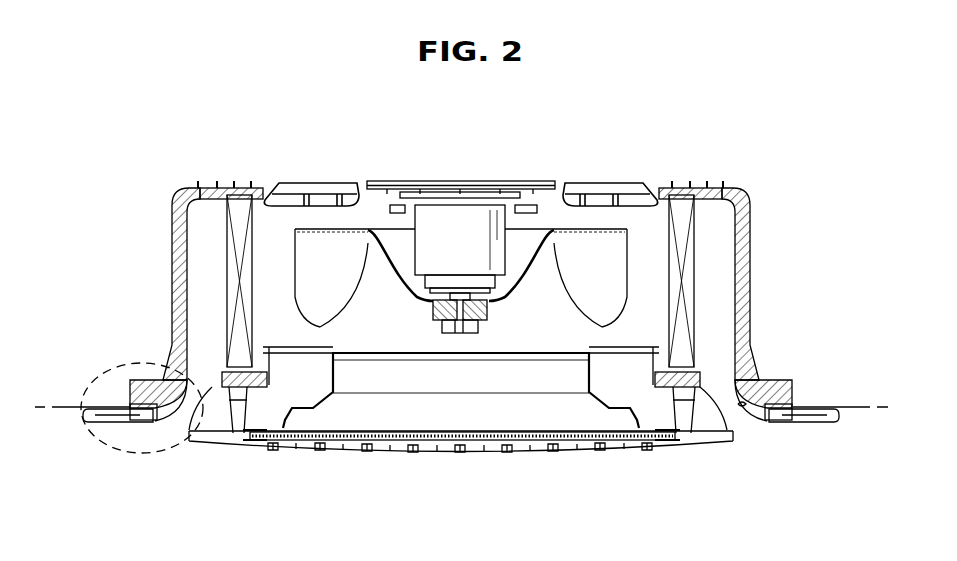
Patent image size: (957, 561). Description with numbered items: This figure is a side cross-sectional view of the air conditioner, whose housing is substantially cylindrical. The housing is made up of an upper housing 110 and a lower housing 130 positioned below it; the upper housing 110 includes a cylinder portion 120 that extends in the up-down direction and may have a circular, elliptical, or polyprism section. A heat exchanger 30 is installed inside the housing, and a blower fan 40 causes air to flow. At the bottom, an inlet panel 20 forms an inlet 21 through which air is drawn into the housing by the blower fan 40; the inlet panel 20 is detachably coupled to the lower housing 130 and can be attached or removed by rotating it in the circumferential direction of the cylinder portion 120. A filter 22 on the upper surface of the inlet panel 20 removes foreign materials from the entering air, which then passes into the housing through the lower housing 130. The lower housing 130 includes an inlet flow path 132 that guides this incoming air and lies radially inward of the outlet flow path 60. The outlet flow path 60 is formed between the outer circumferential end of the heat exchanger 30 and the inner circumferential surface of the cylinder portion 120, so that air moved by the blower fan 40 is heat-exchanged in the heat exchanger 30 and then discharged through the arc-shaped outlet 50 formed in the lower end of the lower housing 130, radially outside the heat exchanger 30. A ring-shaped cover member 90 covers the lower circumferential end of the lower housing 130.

The inlet panel 20 is at (679, 443).
The inlet 21 is at (530, 446).
The filter 22 is at (448, 436).
The heat exchanger 30 is at (650, 194).
The blower fan 40 is at (564, 247).
The outlet 50 is at (737, 410).
The outlet flow path 60 is at (709, 292).
The cover member 90 is at (837, 420).
The upper housing 110 is at (687, 187).
The cylinder portion 120 is at (757, 222).
The lower housing 130 is at (790, 382).
The inlet flow path 132 is at (388, 377).